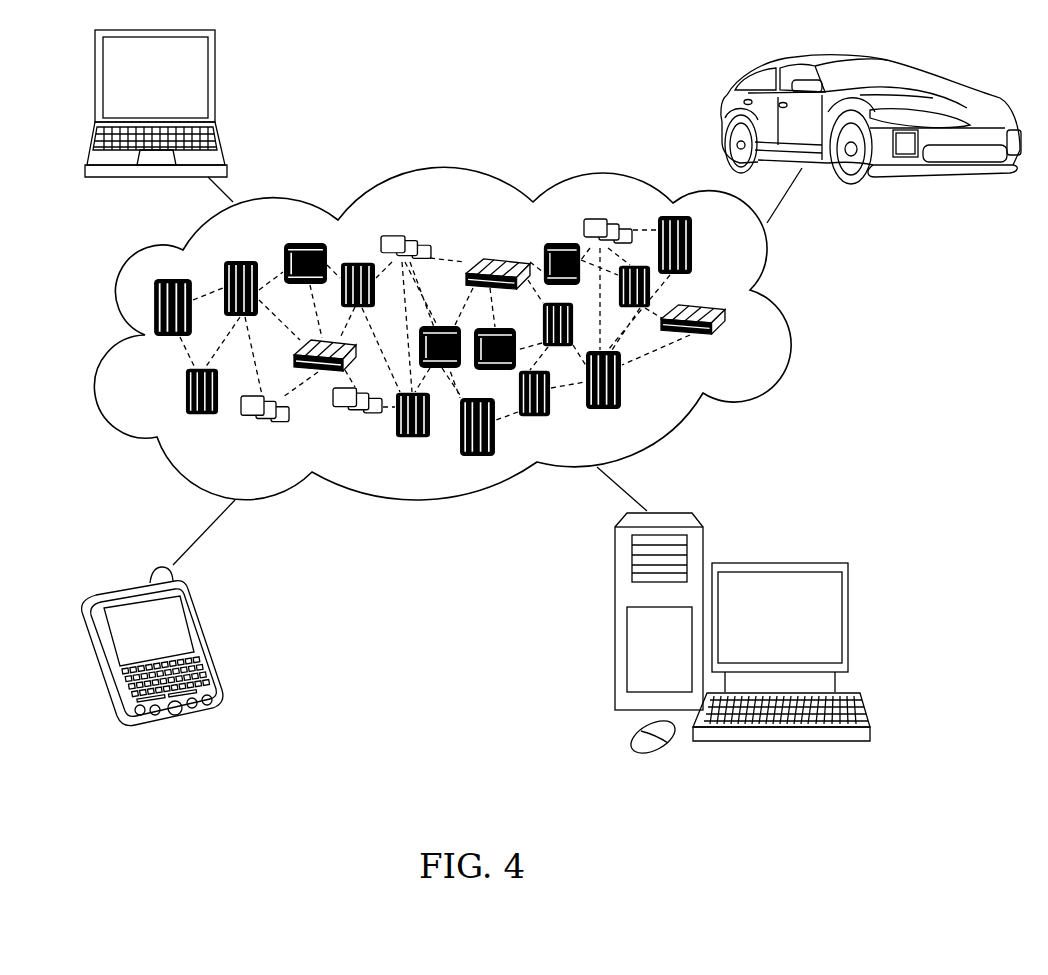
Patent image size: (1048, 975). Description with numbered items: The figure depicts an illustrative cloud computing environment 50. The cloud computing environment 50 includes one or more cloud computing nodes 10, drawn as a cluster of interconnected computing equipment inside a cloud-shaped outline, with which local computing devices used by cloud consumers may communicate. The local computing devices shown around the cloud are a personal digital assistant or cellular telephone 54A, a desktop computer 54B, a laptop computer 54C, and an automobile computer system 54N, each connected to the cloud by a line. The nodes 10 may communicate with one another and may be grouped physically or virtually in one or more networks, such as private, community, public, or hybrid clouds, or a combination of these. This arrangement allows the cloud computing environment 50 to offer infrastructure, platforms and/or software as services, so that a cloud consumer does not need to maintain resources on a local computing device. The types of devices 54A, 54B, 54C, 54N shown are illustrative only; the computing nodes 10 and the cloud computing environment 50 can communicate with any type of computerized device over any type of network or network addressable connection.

The cloud computing node 10 is at (750, 348).
The cloud computing environment 50 is at (796, 323).
The personal digital assistant or cellular telephone 54A is at (203, 640).
The desktop computer 54B is at (812, 562).
The laptop computer 54C is at (215, 92).
The automobile computer system 54N is at (927, 78).